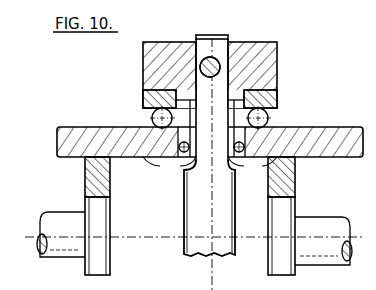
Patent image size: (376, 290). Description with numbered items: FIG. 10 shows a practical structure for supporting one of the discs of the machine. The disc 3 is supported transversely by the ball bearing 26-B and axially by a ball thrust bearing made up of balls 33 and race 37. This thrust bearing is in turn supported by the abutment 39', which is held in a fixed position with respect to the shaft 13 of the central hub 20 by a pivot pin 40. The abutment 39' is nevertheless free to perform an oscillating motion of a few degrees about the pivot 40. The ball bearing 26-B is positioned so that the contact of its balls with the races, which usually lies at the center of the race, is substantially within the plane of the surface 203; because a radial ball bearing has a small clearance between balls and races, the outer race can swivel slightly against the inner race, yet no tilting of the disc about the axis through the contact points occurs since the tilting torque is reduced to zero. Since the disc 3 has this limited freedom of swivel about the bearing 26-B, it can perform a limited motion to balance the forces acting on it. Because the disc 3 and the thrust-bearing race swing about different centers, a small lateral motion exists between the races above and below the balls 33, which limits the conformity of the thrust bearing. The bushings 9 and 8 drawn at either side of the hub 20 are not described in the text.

The disc 3 is at (88, 128).
The right bearing bushing 8 is at (296, 184).
The left bearing bushing 9 is at (85, 181).
The radial shaft 13 is at (197, 36).
The central hub 20 is at (191, 208).
The ball bearing 26-B is at (176, 167).
The ball thrust bearing 33 is at (268, 123).
The race 37 is at (276, 101).
The abutment 39' is at (235, 75).
The pivot pin 40 is at (214, 60).
The surface 203 is at (172, 159).